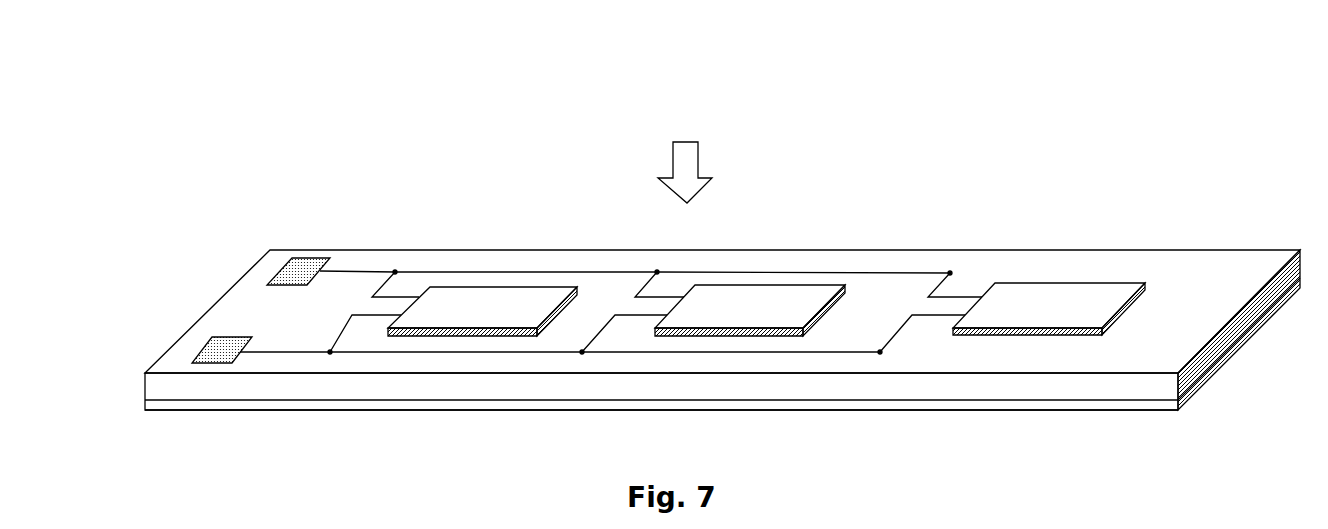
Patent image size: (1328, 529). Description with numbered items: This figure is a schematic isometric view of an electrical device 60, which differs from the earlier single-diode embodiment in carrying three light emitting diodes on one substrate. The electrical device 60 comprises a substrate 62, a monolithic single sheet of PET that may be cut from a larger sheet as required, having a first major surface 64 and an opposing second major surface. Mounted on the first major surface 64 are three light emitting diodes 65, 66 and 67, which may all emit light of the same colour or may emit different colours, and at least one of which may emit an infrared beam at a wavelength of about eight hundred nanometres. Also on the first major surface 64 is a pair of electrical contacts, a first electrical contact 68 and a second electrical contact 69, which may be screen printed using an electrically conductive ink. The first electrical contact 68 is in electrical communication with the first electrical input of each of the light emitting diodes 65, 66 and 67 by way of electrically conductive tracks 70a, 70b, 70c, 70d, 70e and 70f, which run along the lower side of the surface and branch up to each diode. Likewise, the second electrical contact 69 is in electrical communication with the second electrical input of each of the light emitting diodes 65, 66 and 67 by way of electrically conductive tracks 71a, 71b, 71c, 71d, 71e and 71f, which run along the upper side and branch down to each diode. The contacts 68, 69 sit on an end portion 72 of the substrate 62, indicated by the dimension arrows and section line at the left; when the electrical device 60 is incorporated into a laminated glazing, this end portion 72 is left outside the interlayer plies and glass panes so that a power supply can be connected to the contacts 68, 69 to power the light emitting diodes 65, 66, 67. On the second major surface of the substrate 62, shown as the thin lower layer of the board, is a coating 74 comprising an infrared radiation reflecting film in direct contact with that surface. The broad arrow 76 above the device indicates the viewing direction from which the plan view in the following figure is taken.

The electrical device 60 is at (1158, 138).
The substrate 62 is at (1208, 273).
The first major surface 64 is at (1168, 277).
The light emitting diode 65 is at (482, 311).
The light emitting diode 66 is at (750, 310).
The light emitting diode 67 is at (1049, 309).
The first electrical contact 68 is at (222, 346).
The second electrical contact 69 is at (292, 270).
The electrically conductive track 70a is at (285, 343).
The electrically conductive track 70b is at (364, 334).
The electrically conductive track 70c is at (456, 362).
The electrically conductive track 70d is at (623, 334).
The electrically conductive track 70e is at (732, 361).
The electrically conductive track 70f is at (922, 333).
The electrically conductive track 71a is at (357, 264).
The electrically conductive track 71b is at (395, 284).
The electrically conductive track 71c is at (525, 265).
The electrically conductive track 71d is at (659, 284).
The electrically conductive track 71e is at (803, 266).
The electrically conductive track 71f is at (955, 285).
The end portion 72 is at (227, 437).
The coating 74 is at (933, 407).
The arrow 76 is at (687, 162).